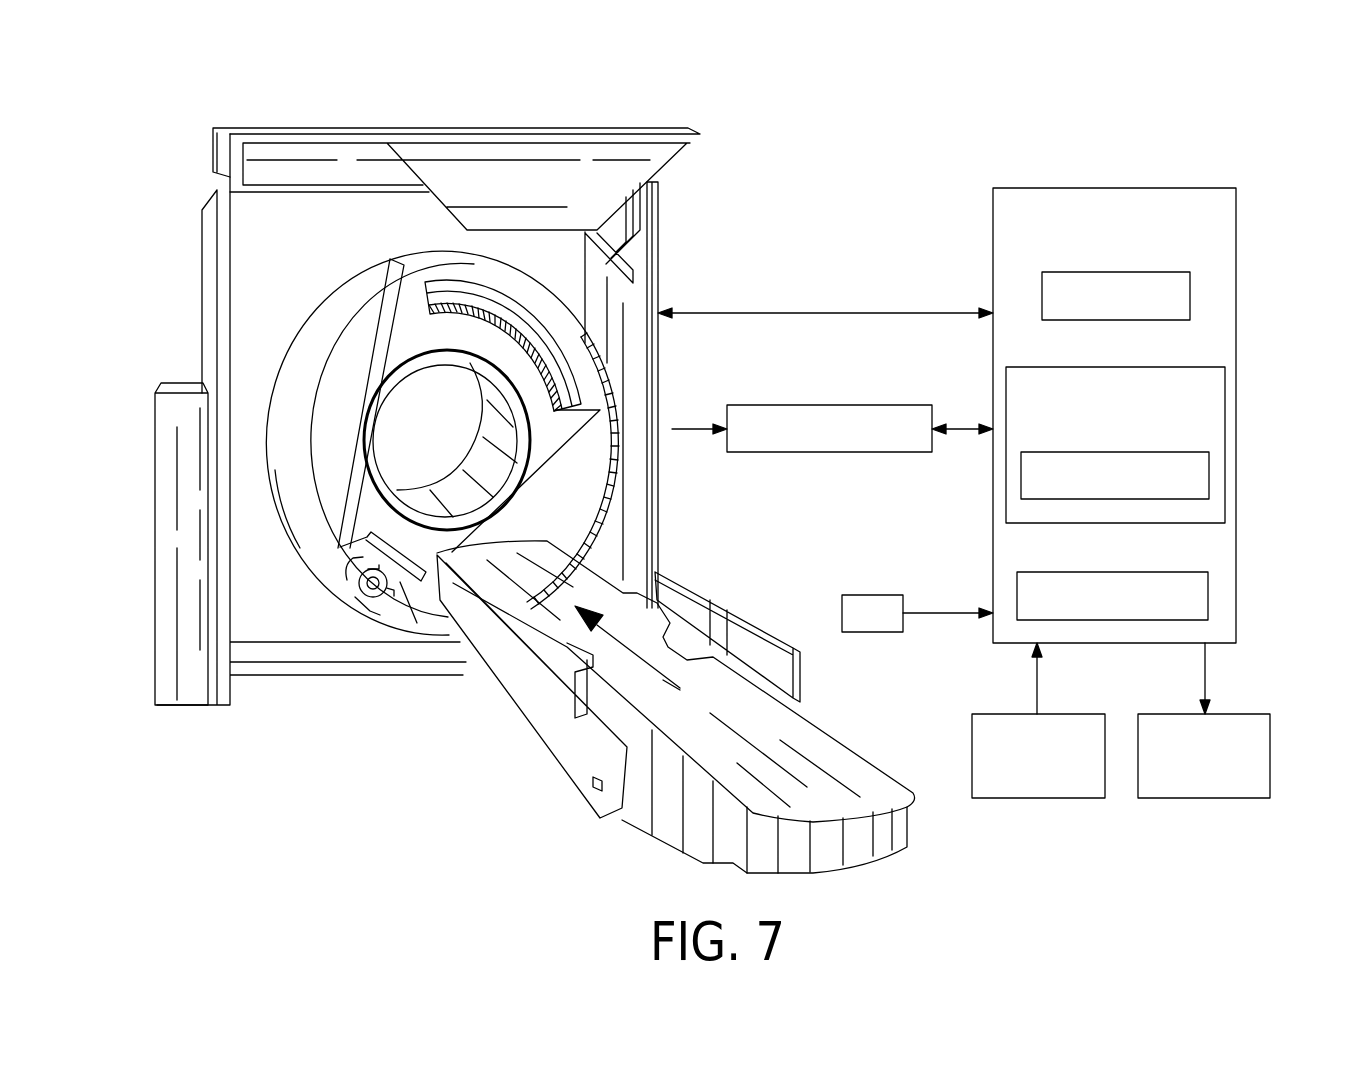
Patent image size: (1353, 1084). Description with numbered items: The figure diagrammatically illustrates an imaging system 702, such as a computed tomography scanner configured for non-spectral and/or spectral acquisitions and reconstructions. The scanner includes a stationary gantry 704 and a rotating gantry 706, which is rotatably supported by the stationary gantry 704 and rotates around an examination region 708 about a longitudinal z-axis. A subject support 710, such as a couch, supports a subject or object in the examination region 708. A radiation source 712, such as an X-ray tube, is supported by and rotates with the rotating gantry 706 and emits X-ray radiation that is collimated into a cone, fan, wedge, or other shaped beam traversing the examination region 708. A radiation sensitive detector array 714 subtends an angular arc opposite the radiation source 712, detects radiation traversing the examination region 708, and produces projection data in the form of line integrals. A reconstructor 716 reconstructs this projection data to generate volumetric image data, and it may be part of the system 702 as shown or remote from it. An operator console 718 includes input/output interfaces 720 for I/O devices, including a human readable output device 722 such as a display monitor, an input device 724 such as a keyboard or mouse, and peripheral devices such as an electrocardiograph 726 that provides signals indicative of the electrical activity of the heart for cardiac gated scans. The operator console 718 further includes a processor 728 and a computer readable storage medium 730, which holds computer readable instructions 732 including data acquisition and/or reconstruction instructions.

The imaging system 702 is at (196, 70).
The stationary gantry 704 is at (213, 285).
The rotating gantry 706 is at (403, 333).
The examination region 708 is at (436, 453).
The subject support 710 is at (843, 765).
The radiation source 712 is at (370, 597).
The radiation sensitive detector array 714 is at (563, 360).
The reconstructor 716 is at (838, 405).
The operator console 718 is at (1115, 188).
The input/output interfaces 720 is at (1117, 572).
The human readable output device 722 is at (1228, 714).
The input device 724 is at (1063, 714).
The electrocardiograph 726 is at (866, 596).
The processor 728 is at (1117, 272).
The computer readable storage medium 730 is at (1118, 367).
The computer readable instructions 732 is at (1120, 452).